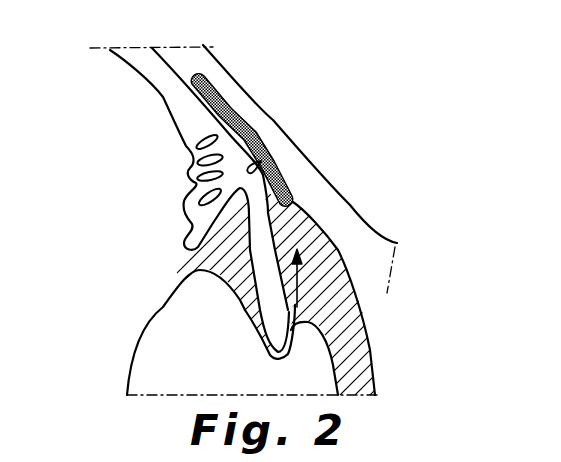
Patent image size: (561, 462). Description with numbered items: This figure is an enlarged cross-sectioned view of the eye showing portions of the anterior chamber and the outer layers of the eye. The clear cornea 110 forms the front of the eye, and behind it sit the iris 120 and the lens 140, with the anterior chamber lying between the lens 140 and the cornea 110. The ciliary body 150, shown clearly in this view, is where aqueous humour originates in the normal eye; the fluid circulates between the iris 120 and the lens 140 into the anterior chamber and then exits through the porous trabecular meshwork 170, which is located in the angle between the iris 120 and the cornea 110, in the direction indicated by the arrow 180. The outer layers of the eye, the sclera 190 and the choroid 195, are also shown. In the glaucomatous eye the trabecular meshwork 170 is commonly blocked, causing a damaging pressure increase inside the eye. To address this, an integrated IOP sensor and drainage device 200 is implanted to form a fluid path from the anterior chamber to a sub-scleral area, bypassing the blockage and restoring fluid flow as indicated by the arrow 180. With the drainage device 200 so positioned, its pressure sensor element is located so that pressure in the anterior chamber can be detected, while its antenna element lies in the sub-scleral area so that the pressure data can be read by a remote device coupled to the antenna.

The cornea 110 is at (358, 218).
The iris 120 is at (280, 337).
The lens 140 is at (170, 357).
The ciliary body 150 is at (200, 175).
The trabecular meshwork 170 is at (260, 165).
The arrow 180 is at (282, 302).
The sclera 190 is at (198, 62).
The choroid 195 is at (168, 92).
The integrated IOP sensor and drainage device 200 is at (240, 120).